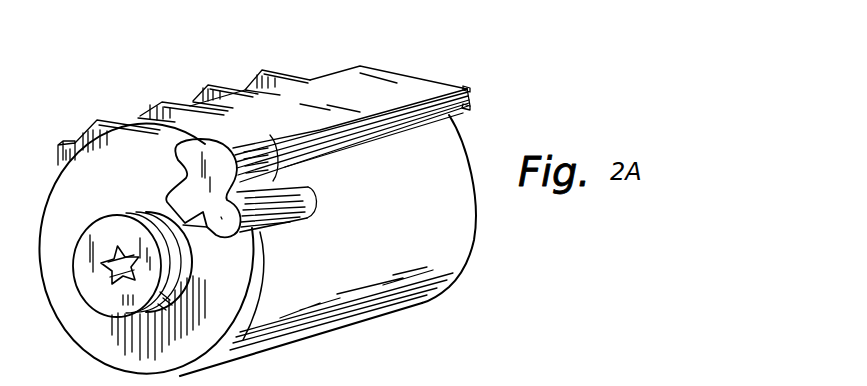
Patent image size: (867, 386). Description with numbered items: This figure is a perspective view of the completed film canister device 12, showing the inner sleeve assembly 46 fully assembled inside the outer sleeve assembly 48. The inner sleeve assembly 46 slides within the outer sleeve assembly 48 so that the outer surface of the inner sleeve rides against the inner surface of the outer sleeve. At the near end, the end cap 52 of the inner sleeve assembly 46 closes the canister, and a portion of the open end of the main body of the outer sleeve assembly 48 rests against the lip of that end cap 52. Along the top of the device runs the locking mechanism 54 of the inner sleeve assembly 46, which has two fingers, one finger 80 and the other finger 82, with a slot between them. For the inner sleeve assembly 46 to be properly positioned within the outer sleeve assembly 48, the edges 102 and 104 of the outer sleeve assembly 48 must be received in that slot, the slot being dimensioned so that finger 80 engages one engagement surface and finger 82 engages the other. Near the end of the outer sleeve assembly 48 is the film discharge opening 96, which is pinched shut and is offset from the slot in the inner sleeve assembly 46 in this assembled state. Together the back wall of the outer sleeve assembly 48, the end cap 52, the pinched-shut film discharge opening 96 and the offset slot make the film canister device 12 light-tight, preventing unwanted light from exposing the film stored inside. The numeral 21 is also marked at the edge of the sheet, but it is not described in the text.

The film canister device 12 is at (124, 71).
The inner sleeve assembly 46 is at (107, 348).
The outer sleeve assembly 48 is at (430, 229).
The end cap 52 is at (147, 184).
The locking mechanism 54 is at (298, 212).
The finger 80 is at (285, 131).
The finger 82 is at (293, 190).
The film discharge opening 96 is at (490, 92).
The edge 102 is at (490, 69).
The edge 104 is at (468, 100).
The housing 21 is at (563, 379).